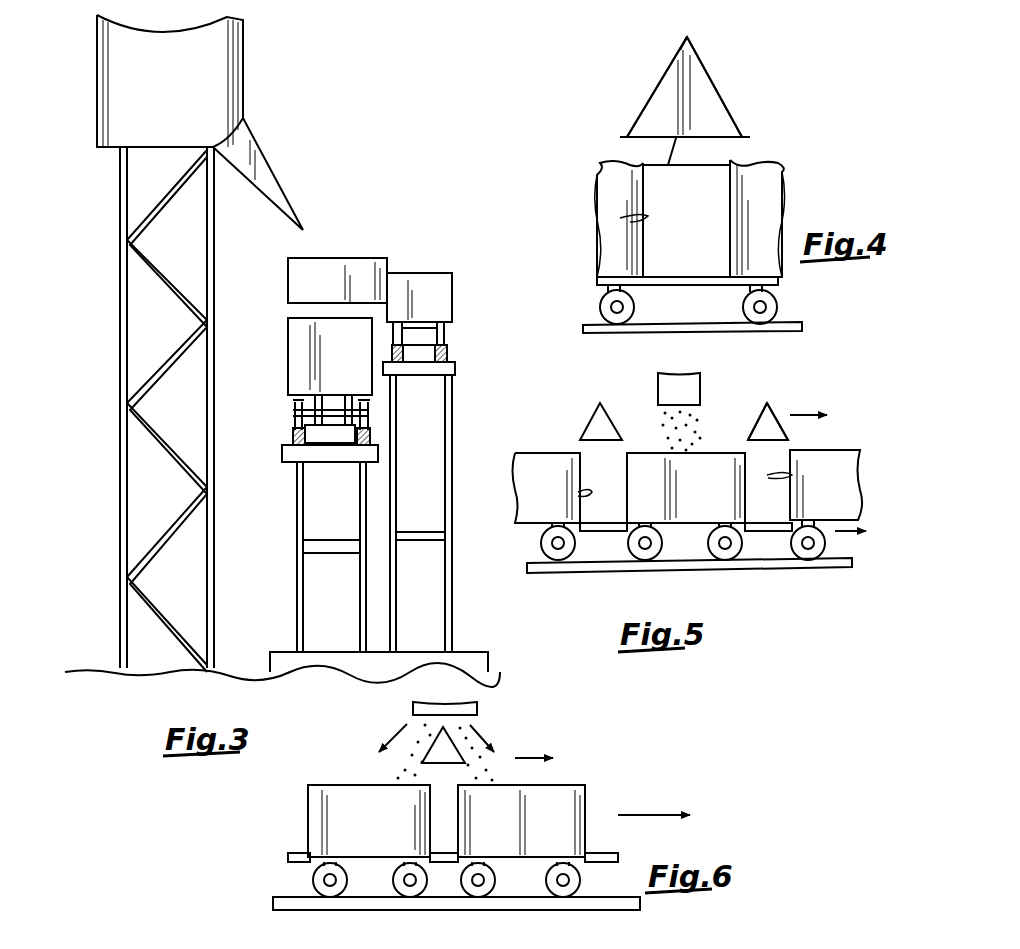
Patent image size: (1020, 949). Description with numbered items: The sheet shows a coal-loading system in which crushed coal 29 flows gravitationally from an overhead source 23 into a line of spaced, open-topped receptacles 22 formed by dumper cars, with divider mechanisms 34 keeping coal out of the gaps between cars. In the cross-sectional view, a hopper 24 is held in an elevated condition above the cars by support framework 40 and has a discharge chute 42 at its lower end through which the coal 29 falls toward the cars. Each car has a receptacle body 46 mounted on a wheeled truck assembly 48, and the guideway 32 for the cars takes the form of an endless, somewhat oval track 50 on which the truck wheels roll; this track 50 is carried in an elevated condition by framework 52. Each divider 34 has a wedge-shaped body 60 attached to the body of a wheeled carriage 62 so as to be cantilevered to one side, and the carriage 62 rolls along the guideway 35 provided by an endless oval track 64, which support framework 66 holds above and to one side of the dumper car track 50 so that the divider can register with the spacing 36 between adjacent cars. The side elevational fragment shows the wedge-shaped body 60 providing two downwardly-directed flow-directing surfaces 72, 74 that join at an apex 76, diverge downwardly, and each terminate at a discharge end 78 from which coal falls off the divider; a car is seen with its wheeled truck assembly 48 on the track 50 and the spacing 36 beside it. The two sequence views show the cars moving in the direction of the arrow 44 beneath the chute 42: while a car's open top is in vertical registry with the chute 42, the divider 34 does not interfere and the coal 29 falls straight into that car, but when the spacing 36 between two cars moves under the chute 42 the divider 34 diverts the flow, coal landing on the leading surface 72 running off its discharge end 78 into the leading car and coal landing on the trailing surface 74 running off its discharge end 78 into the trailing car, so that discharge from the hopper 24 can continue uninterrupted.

In FIG. 4, the open-topped receptacle 22 is at (620, 165).
In FIG. 5, the open-topped receptacle 22 is at (550, 452).
In FIG. 6, the open-topped receptacle 22 is at (345, 785).
In FIG. 3, the overhead source 23 is at (92, 54).
In FIG. 3, the hopper 24 is at (105, 75).
In FIG. 5, the crushed coal 29 is at (664, 418).
In FIG. 6, the crushed coal 29 is at (414, 722).
In FIG. 3, the guideway 32 is at (282, 452).
In FIG. 3, the divider mechanism 34 is at (325, 258).
In FIG. 4, the divider mechanism 34 is at (705, 62).
In FIG. 5, the divider mechanism 34 is at (590, 415).
In FIG. 6, the divider mechanism 34 is at (448, 765).
In FIG. 3, the guideway 35 is at (455, 366).
In FIG. 4, the spacing 36 is at (620, 218).
In FIG. 5, the spacing 36 is at (582, 493).
In FIG. 3, the support framework 40 is at (118, 476).
In FIG. 3, the discharge chute 42 is at (270, 178).
In FIG. 5, the discharge chute 42 is at (658, 388).
In FIG. 6, the discharge chute 42 is at (413, 705).
In FIG. 5, the arrow 44 is at (843, 533).
In FIG. 6, the arrow 44 is at (640, 815).
In FIG. 3, the receptacle body 46 is at (286, 350).
In FIG. 4, the receptacle body 46 is at (755, 158).
In FIG. 3, the wheeled truck assembly 48 is at (293, 403).
In FIG. 4, the wheeled truck assembly 48 is at (598, 300).
In FIG. 6, the wheeled truck assembly 48 is at (315, 880).
In FIG. 3, the track 50 is at (297, 428).
In FIG. 5, the track 50 is at (778, 573).
In FIG. 6, the track 50 is at (298, 912).
In FIG. 3, the framework 52 is at (297, 560).
In FIG. 3, the wedge-shaped body 60 is at (286, 270).
In FIG. 4, the wedge-shaped body 60 is at (669, 169).
In FIG. 3, the wheeled carriage 62 is at (416, 273).
In FIG. 3, the track 64 is at (448, 346).
In FIG. 3, the support framework 66 is at (450, 565).
In FIG. 4, the flow-directing surface 72 is at (727, 110).
In FIG. 5, the flow-directing surface 72 is at (782, 420).
In FIG. 4, the flow-directing surface 74 is at (665, 65).
In FIG. 5, the flow-directing surface 74 is at (757, 420).
In FIG. 4, the apex 76 is at (688, 37).
In FIG. 4, the discharge end 78 is at (627, 137).